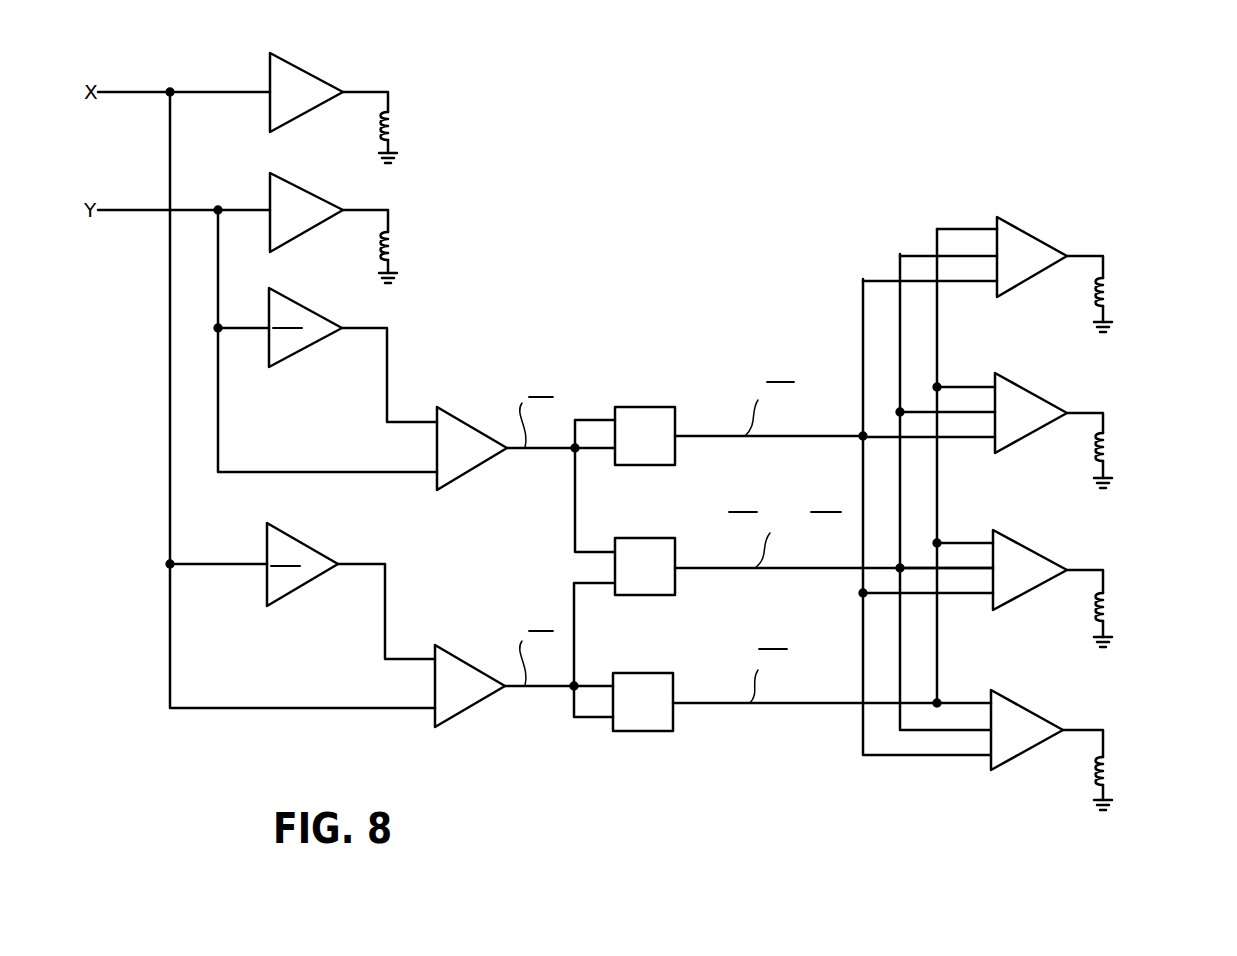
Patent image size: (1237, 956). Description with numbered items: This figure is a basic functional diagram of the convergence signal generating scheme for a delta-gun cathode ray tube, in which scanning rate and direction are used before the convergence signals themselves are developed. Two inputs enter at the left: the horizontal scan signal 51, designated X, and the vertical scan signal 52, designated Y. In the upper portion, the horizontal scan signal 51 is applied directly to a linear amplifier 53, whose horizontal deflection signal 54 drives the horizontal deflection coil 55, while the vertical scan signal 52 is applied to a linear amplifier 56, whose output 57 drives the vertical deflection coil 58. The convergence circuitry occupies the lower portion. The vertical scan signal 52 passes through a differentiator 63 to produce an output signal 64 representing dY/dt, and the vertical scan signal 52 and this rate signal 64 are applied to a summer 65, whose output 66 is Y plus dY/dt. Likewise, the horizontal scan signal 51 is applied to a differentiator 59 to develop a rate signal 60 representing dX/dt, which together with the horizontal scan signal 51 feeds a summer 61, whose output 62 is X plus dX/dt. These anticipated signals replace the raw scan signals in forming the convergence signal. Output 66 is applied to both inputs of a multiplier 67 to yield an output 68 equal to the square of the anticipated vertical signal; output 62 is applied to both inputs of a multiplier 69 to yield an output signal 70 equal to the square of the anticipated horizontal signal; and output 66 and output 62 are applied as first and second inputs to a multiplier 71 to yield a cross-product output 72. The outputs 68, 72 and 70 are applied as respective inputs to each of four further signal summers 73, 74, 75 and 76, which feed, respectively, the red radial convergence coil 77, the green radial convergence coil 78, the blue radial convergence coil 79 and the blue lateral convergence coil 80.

The horizontal scan signal 51 is at (130, 92).
The vertical scan signal 52 is at (130, 210).
The linear amplifier 53 is at (317, 75).
The horizontal deflection signal 54 is at (360, 92).
The horizontal deflection coil 55 is at (387, 126).
The linear amplifier 56 is at (317, 193).
The output 57 is at (359, 210).
The vertical deflection coil 58 is at (387, 244).
The differentiator 59 is at (307, 543).
The rate signal 60 is at (372, 563).
The summer 61 is at (457, 657).
The output 62 is at (538, 686).
The differentiator 63 is at (308, 348).
The output signal 64 is at (363, 328).
The summer 65 is at (460, 417).
The output 66 is at (538, 448).
The multiplier 67 is at (645, 407).
The output 68 is at (785, 436).
The multiplier 69 is at (643, 673).
The output signal 70 is at (775, 703).
The multiplier 71 is at (645, 538).
The cross-product output 72 is at (780, 568).
The signal summer 73 is at (1025, 230).
The signal summer 74 is at (1025, 388).
The signal summer 75 is at (1020, 537).
The signal summer 76 is at (1020, 698).
The red radial convergence coil 77 is at (1099, 295).
The green radial convergence coil 78 is at (1099, 453).
The blue radial convergence coil 79 is at (1099, 611).
The blue lateral convergence coil 80 is at (1099, 775).